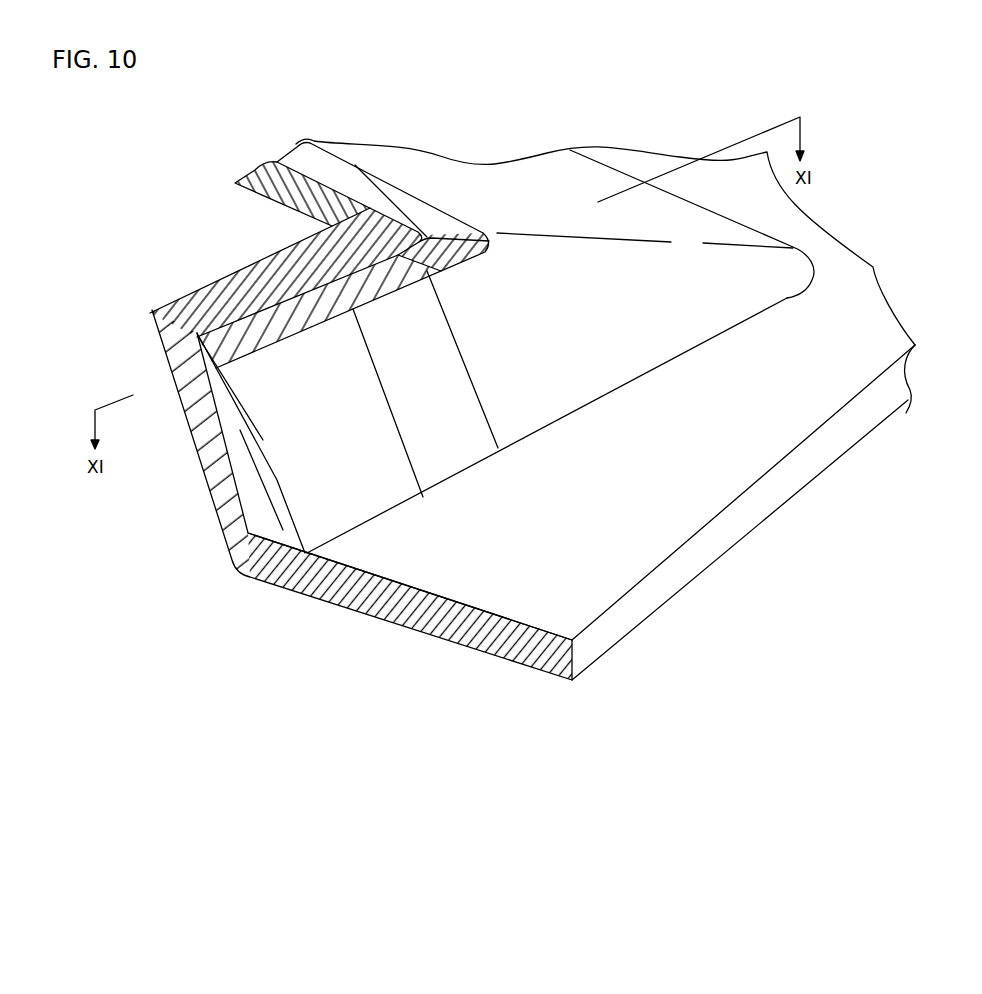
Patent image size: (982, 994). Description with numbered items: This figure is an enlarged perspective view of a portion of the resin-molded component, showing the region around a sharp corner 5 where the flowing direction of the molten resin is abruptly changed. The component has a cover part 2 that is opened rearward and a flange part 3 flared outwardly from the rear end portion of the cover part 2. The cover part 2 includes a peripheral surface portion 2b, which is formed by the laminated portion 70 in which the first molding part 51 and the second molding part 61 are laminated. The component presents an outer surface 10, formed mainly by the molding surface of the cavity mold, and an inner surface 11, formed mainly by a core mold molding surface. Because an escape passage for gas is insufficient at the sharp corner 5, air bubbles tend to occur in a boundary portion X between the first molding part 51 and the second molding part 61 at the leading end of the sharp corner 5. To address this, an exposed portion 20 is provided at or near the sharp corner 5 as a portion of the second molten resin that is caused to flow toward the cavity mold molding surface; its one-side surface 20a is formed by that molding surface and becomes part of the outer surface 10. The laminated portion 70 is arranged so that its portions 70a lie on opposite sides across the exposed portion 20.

The cover part 2 is at (385, 158).
The peripheral surface portion 2b is at (425, 165).
The flange part 3 is at (847, 430).
The sharp corner 5 is at (557, 238).
The outer surface 10 is at (598, 180).
The inner surface 11 is at (247, 222).
The exposed portion 20 is at (465, 448).
The one-side surface 20a is at (450, 457).
The first molding part 51 is at (228, 417).
The second molding part 61 is at (213, 480).
The laminated portion 70 is at (182, 298).
The portion of the laminated portion 70a is at (405, 462).
The boundary portion X is at (478, 222).